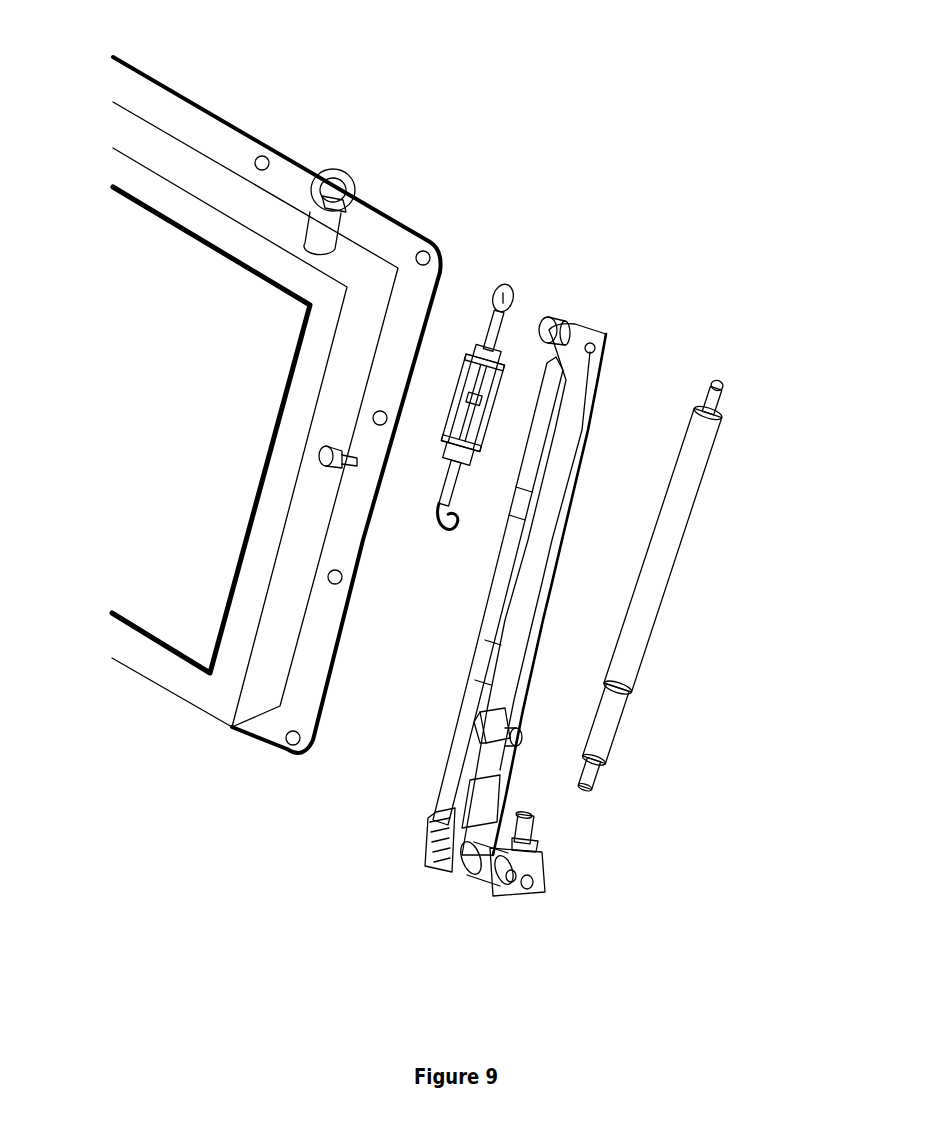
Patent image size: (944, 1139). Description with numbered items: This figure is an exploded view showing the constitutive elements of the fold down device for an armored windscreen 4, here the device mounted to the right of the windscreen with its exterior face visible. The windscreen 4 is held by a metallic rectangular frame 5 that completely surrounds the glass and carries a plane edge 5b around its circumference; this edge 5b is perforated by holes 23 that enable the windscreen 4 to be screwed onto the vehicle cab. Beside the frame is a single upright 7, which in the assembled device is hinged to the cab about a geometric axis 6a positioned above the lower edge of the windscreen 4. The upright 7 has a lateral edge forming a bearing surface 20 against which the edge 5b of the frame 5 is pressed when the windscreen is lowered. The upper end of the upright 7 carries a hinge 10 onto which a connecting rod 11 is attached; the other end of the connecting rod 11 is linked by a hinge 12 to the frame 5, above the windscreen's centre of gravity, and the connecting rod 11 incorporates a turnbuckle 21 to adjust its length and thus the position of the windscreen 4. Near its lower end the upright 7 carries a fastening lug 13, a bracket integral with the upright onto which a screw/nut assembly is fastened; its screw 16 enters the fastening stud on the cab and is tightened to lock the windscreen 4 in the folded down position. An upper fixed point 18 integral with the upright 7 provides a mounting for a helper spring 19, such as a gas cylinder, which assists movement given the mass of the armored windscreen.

The windscreen 4 is at (260, 338).
The frame 5 is at (203, 177).
The plane edge 5b is at (393, 360).
The geometric axis 6a is at (463, 878).
The upright 7 is at (578, 415).
The hinge 10 is at (568, 318).
The connecting rod 11 is at (486, 300).
The hinge 12 is at (330, 460).
The fastening lug 13 is at (510, 893).
The screw 16 is at (540, 823).
The upper fixed point 18 is at (523, 745).
The helper spring 19 is at (632, 642).
The bearing surface 20 is at (512, 462).
The turnbuckle 21 is at (447, 422).
The holes 23 is at (423, 251).